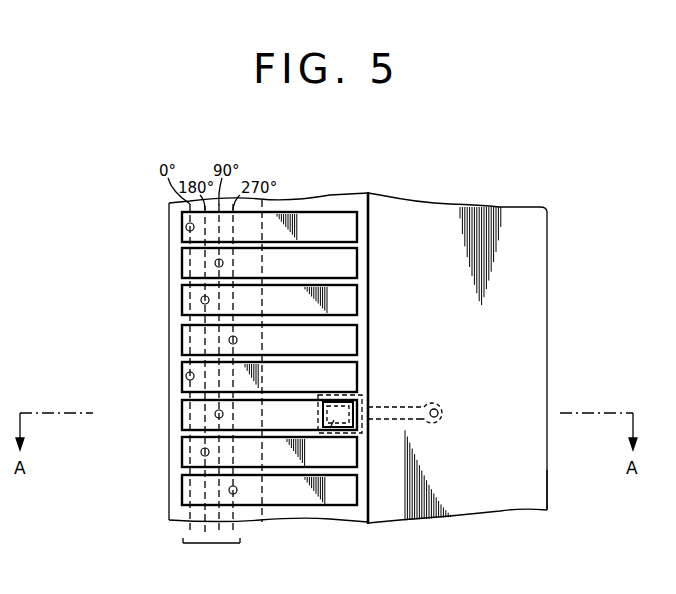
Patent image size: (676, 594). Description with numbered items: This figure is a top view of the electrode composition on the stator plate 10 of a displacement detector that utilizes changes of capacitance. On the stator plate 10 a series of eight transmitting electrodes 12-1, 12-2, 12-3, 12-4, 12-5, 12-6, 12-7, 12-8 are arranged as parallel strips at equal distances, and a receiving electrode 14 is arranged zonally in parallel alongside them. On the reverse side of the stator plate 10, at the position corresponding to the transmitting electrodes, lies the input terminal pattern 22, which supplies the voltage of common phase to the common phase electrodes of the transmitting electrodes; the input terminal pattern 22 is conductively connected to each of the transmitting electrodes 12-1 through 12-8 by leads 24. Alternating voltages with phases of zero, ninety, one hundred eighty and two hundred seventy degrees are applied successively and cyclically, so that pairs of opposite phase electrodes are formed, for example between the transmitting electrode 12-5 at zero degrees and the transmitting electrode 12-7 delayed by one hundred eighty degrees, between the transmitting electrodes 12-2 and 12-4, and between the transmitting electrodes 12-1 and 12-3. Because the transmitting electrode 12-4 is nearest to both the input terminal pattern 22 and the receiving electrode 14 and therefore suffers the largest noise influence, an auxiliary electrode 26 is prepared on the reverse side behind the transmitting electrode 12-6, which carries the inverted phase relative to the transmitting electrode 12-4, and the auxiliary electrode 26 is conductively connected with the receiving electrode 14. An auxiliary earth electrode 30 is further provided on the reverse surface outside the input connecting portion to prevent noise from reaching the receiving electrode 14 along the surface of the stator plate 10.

The stator plate 10 is at (343, 200).
The receiving electrode 14 is at (412, 207).
The transmitting electrode 12-1 is at (182, 222).
The transmitting electrode 12-2 is at (182, 272).
The transmitting electrode 12-3 is at (182, 309).
The transmitting electrode 12-4 is at (182, 343).
The transmitting electrode 12-5 is at (182, 376).
The transmitting electrode 12-6 is at (182, 405).
The transmitting electrode 12-7 is at (182, 454).
The transmitting electrode 12-8 is at (182, 494).
The input terminal pattern 22 is at (212, 543).
The lead 24 is at (186, 228).
The auxiliary electrode 26 is at (333, 434).
The auxiliary earth electrode 30 is at (522, 490).